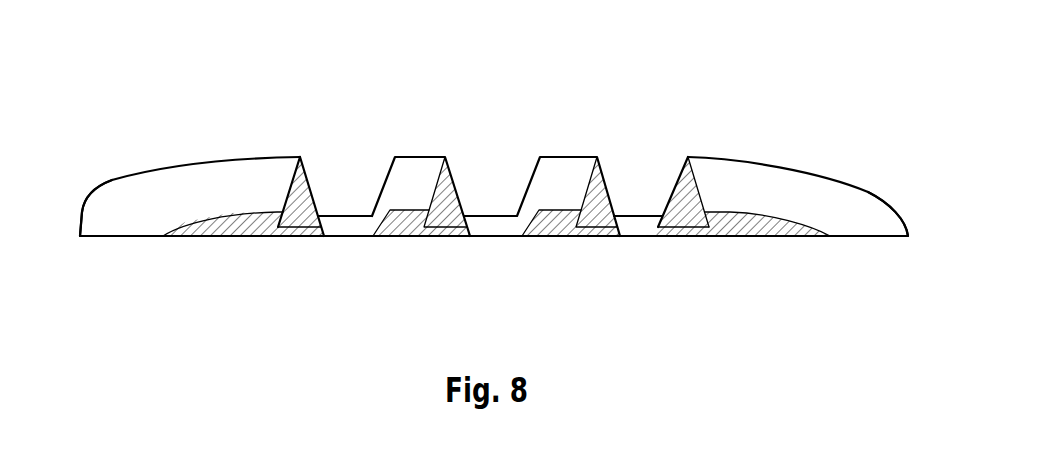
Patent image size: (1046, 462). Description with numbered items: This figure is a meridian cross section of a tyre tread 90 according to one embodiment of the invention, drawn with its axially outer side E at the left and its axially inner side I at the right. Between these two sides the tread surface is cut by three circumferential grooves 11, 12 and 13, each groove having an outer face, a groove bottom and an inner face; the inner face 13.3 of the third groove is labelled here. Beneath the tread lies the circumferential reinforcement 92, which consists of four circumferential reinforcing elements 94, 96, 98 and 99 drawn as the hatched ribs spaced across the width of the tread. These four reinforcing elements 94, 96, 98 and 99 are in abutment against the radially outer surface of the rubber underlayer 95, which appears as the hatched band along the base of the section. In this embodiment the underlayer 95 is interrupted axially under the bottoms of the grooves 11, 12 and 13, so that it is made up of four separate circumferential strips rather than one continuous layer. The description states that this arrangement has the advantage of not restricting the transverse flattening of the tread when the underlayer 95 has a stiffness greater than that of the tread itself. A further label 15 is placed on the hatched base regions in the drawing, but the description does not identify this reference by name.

The tread 90 is at (292, 112).
The outer side E is at (122, 168).
The inner side I is at (862, 167).
The groove 11 is at (330, 195).
The groove 12 is at (473, 198).
The groove 13 is at (635, 195).
The inner face 13.3 is at (675, 192).
The base layer 15 is at (400, 212).
The circumferential reinforcement 92 is at (463, 300).
The circumferential reinforcing element 94 is at (452, 225).
The rubber underlayer 95 is at (252, 232).
The circumferential reinforcing element 96 is at (292, 225).
The circumferential reinforcing element 98 is at (597, 225).
The circumferential reinforcing element 99 is at (680, 225).